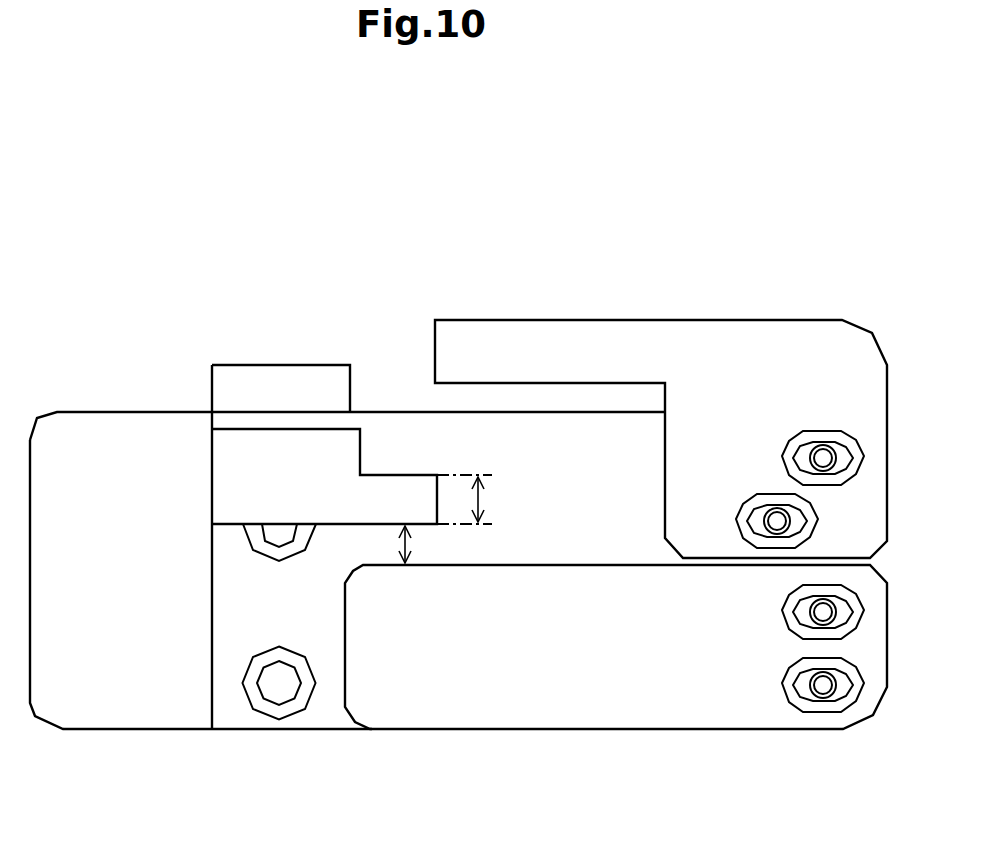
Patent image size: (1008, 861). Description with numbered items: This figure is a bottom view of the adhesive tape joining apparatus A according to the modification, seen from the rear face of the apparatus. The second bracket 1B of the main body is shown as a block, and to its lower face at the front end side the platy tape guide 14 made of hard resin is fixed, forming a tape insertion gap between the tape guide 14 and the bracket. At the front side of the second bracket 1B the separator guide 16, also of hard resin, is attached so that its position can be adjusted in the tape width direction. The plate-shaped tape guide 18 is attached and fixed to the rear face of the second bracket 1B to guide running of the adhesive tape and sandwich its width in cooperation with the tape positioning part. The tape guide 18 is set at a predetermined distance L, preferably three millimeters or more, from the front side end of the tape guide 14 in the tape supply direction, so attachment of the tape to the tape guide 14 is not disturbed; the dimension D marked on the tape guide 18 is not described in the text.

The second bracket 1B is at (242, 729).
The tape guide 14 is at (459, 729).
The separator guide 16 is at (628, 320).
The tape guide 18 is at (212, 492).
The adhesive tape joining apparatus A is at (549, 253).
The thickness of spacer block D is at (478, 498).
The predetermined distance L is at (408, 550).